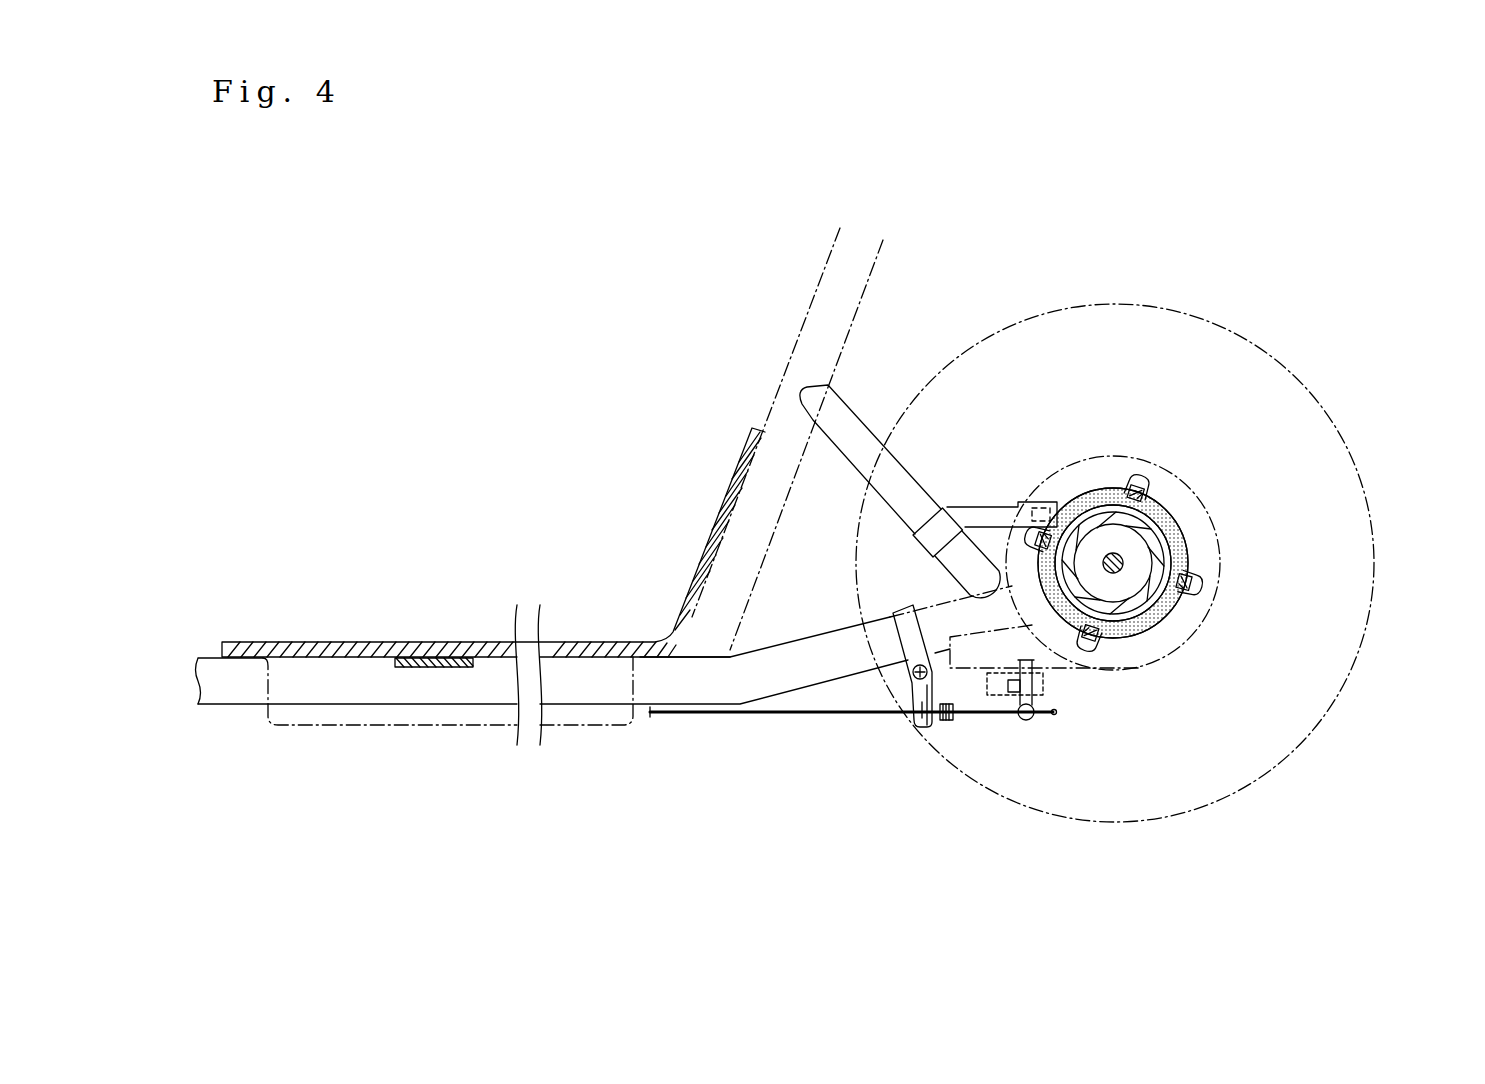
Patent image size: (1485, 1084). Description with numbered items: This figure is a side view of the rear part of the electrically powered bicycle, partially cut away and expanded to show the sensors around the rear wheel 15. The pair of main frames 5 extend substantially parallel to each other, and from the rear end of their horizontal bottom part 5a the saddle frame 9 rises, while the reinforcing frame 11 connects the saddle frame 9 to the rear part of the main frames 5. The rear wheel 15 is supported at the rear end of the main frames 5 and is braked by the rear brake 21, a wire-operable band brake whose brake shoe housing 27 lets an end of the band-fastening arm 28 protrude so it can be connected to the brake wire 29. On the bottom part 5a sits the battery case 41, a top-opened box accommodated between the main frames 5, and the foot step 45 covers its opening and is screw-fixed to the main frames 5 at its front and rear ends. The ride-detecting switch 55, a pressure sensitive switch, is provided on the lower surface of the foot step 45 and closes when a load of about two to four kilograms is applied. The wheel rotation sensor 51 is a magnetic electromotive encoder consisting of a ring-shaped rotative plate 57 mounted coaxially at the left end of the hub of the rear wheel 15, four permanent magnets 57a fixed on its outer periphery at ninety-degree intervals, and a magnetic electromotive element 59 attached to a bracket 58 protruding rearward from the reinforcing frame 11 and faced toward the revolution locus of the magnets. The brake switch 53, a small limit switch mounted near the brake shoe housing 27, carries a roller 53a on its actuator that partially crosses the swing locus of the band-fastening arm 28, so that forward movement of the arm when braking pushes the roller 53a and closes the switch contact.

The main frames 5 is at (740, 690).
The horizontal bottom part 5a is at (240, 692).
The saddle frame 9 is at (812, 316).
The reinforcing frame 11 is at (853, 412).
The rear wheel 15 is at (1250, 340).
The rear brake 21 is at (1205, 503).
The brake shoe housing 27 is at (1203, 540).
The band-fastening arm 28 is at (1035, 694).
The brake wire 29 is at (837, 718).
The battery case 41 is at (457, 728).
The foot step 45 is at (580, 645).
The wheel rotation sensor 51 is at (1094, 404).
The brake switch 53 is at (987, 680).
The roller 53a is at (1010, 697).
The ride-detecting switch 55 is at (420, 667).
The rotative plate 57 is at (1118, 488).
The permanent magnets 57a is at (1137, 488).
The bracket 58 is at (973, 515).
The magnetic electromotive element 59 is at (1045, 495).